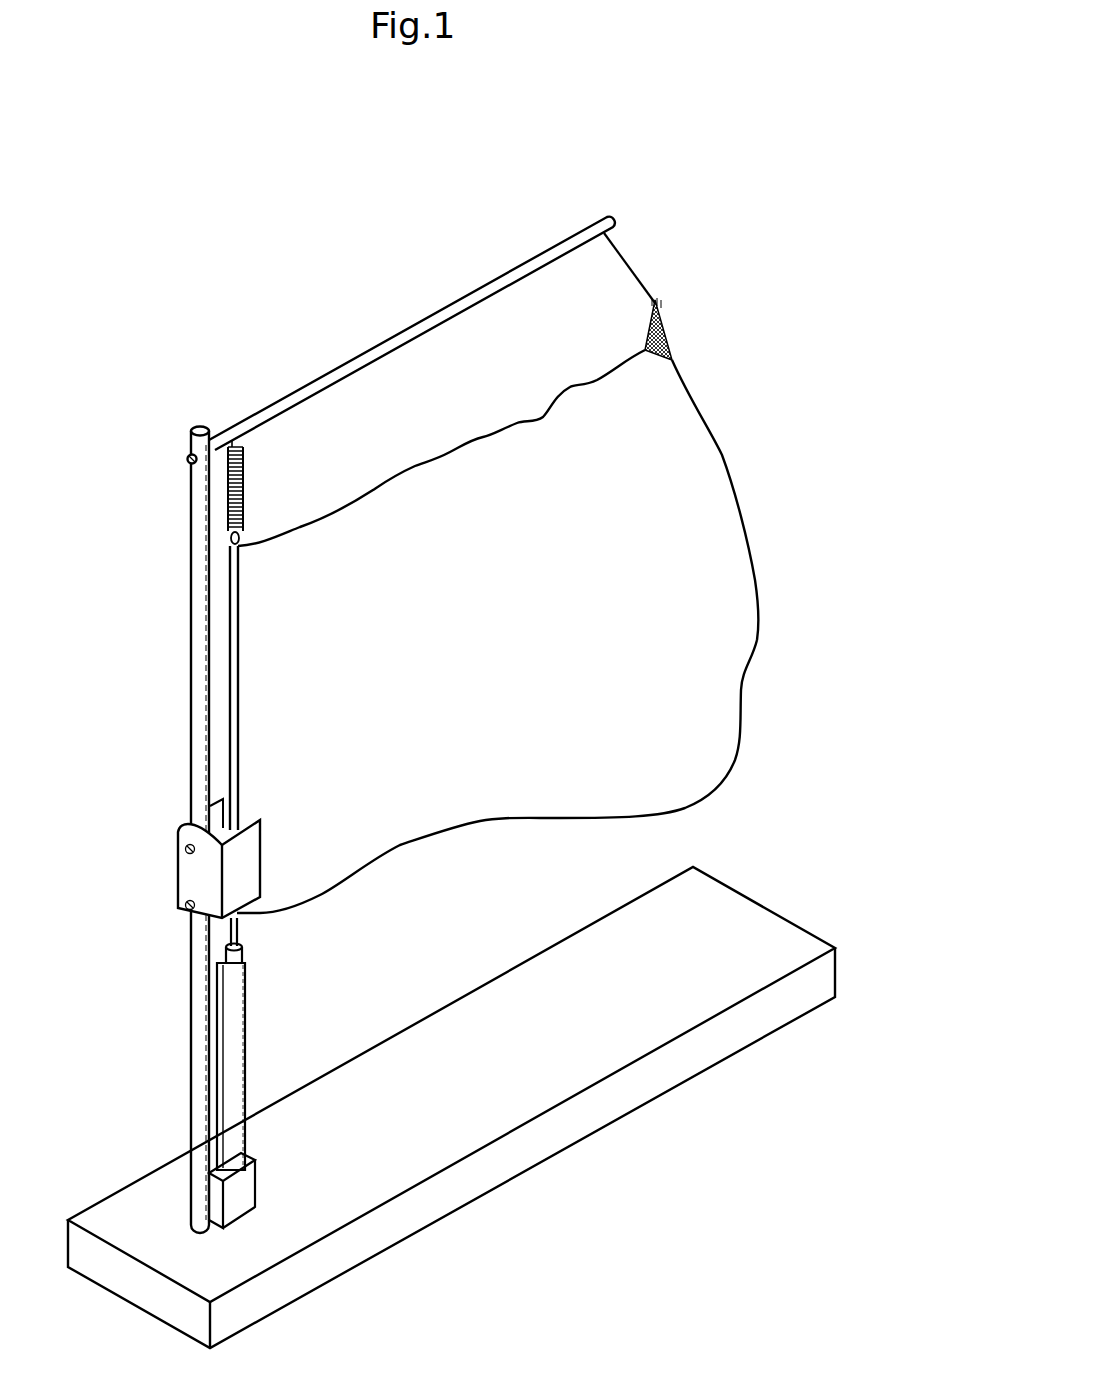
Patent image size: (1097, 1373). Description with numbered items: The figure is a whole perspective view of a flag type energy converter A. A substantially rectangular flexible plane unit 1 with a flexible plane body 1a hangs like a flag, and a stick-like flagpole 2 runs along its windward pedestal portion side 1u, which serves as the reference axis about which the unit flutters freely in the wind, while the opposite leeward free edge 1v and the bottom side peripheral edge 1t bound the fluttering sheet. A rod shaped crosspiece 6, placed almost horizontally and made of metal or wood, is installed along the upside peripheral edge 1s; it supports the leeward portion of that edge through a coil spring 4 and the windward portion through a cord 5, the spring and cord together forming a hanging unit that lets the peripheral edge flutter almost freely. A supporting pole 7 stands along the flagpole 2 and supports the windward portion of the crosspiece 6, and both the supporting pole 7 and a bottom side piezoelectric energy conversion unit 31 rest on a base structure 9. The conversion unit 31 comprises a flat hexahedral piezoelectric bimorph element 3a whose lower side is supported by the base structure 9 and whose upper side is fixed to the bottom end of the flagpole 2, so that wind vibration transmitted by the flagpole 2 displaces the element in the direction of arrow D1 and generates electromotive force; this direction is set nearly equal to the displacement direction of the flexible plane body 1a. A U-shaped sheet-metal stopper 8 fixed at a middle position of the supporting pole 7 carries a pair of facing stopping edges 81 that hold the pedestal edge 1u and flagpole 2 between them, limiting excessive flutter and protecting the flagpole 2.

The energy converter A is at (305, 210).
The flexible plane unit 1 is at (552, 631).
The flexible plane body 1a is at (705, 667).
The upside peripheral edge 1s is at (426, 452).
The bottom side peripheral edge 1t is at (442, 847).
The pedestal portion side 1u is at (248, 690).
The free edge of flag 1v is at (766, 544).
The flagpole 2 is at (226, 655).
The piezoelectric bimorph element 3a is at (248, 1000).
The bottom side piezoelectric energy conversion unit 31 is at (274, 1057).
The coil spring 4 is at (246, 492).
The cord 5 is at (627, 262).
The crosspiece 6 is at (414, 322).
The supporting pole 7 is at (186, 737).
The stopper 8 is at (226, 851).
The stopping edges 81 is at (186, 822).
The base structure 9 is at (535, 1175).
The direction of displacement D1 is at (250, 936).